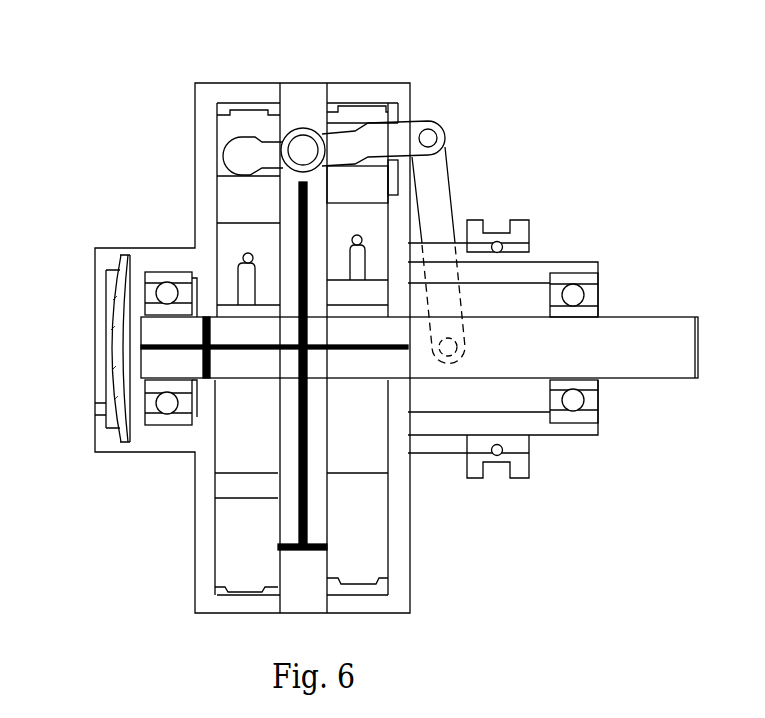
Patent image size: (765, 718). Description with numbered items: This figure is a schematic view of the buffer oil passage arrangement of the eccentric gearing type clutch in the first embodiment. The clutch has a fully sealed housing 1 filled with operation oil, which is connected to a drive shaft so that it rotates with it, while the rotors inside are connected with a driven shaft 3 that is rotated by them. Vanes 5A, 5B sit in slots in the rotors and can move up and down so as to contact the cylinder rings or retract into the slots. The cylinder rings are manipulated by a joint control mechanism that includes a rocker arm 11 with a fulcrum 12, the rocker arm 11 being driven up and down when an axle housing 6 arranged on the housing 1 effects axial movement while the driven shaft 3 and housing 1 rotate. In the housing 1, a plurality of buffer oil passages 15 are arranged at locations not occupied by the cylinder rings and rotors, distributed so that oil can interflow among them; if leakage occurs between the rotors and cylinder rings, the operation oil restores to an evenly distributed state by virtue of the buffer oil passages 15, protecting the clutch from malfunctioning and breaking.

The housing 1 is at (353, 93).
The driven shaft 3 is at (653, 350).
The vane 5A is at (243, 260).
The vane 5B is at (357, 241).
The axle housing 6 is at (520, 233).
The rocker arm 11 is at (365, 140).
The fulcrum 12 is at (305, 152).
The buffer oil passages 15 is at (303, 475).